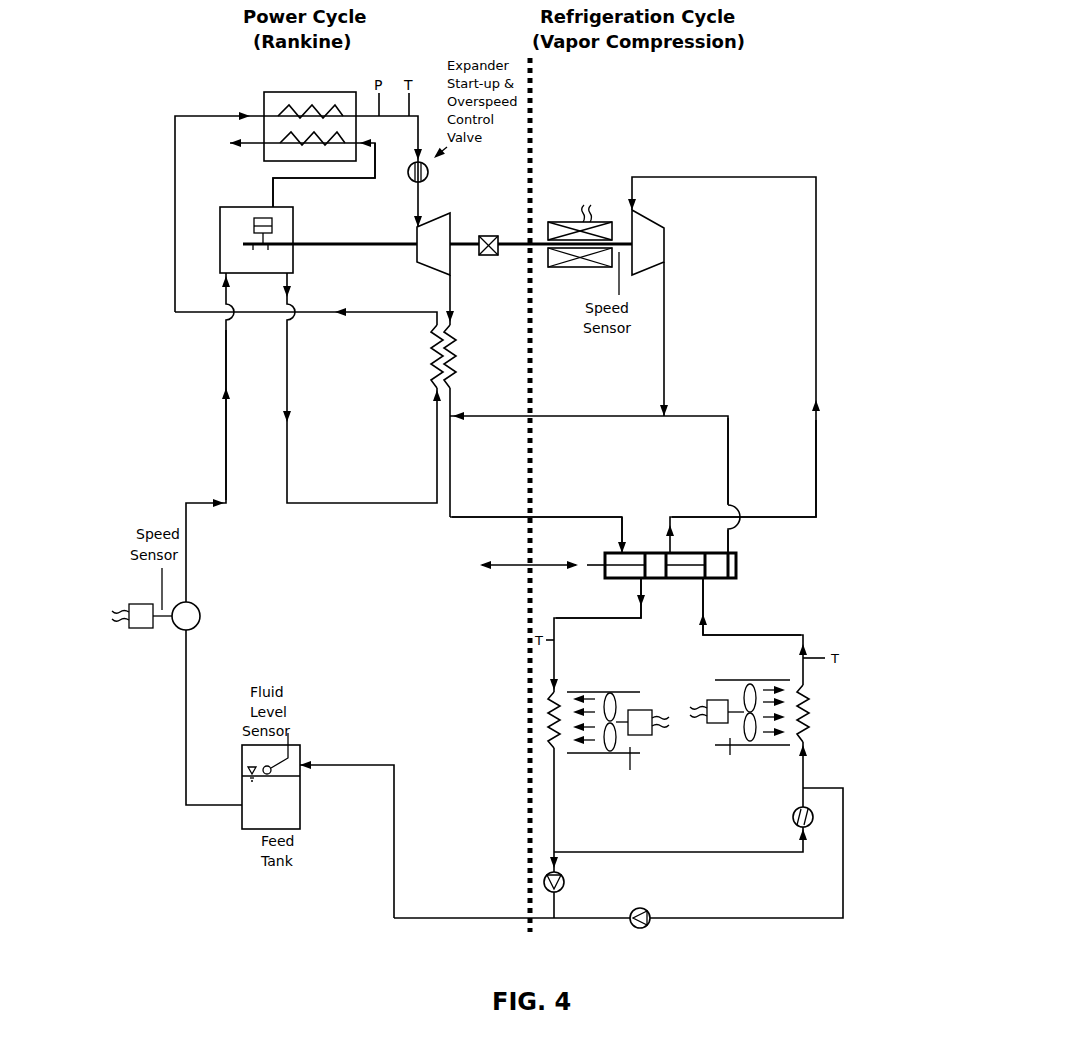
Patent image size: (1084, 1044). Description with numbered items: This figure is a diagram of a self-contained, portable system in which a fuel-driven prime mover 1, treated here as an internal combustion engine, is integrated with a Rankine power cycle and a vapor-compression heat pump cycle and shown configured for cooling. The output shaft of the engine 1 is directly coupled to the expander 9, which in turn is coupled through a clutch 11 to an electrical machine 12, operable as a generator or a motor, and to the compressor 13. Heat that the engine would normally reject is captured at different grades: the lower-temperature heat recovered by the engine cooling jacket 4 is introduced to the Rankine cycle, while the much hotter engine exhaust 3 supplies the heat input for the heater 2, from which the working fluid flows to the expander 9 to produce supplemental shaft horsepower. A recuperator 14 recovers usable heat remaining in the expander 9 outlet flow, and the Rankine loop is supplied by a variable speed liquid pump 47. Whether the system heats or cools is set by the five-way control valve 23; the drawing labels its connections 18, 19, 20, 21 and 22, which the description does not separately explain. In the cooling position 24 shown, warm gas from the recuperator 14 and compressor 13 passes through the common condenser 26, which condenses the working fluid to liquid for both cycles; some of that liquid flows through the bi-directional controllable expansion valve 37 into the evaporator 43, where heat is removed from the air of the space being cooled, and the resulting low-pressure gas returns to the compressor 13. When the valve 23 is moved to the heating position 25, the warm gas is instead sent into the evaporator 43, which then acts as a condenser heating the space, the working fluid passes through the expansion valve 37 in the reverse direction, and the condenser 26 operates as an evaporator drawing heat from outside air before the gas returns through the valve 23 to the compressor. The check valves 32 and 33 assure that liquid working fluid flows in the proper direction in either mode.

The prime mover 1 is at (213, 258).
The heater 2 is at (310, 117).
The engine exhaust 3 is at (288, 175).
The engine cooling jacket 4 is at (189, 415).
The expander 9 is at (389, 239).
The clutch 11 is at (490, 272).
The electrical machine 12 is at (597, 209).
The compressor 13 is at (708, 242).
The recuperator 14 is at (389, 356).
The five-way valve port 18 is at (538, 523).
The five-way valve port 19 is at (743, 485).
The five-way valve port 20 is at (614, 598).
The five-way valve port 21 is at (752, 607).
The five-way valve port 22 is at (744, 468).
The control valve 23 is at (751, 565).
The cooling position 24 is at (571, 550).
The heating position 25 is at (484, 550).
The condenser 26 is at (545, 739).
The check valve 32 is at (509, 883).
The check valve 33 is at (640, 899).
The controllable expansion valve 37 is at (745, 819).
The evaporator 43 is at (807, 729).
The variable speed liquid pump 47 is at (223, 612).